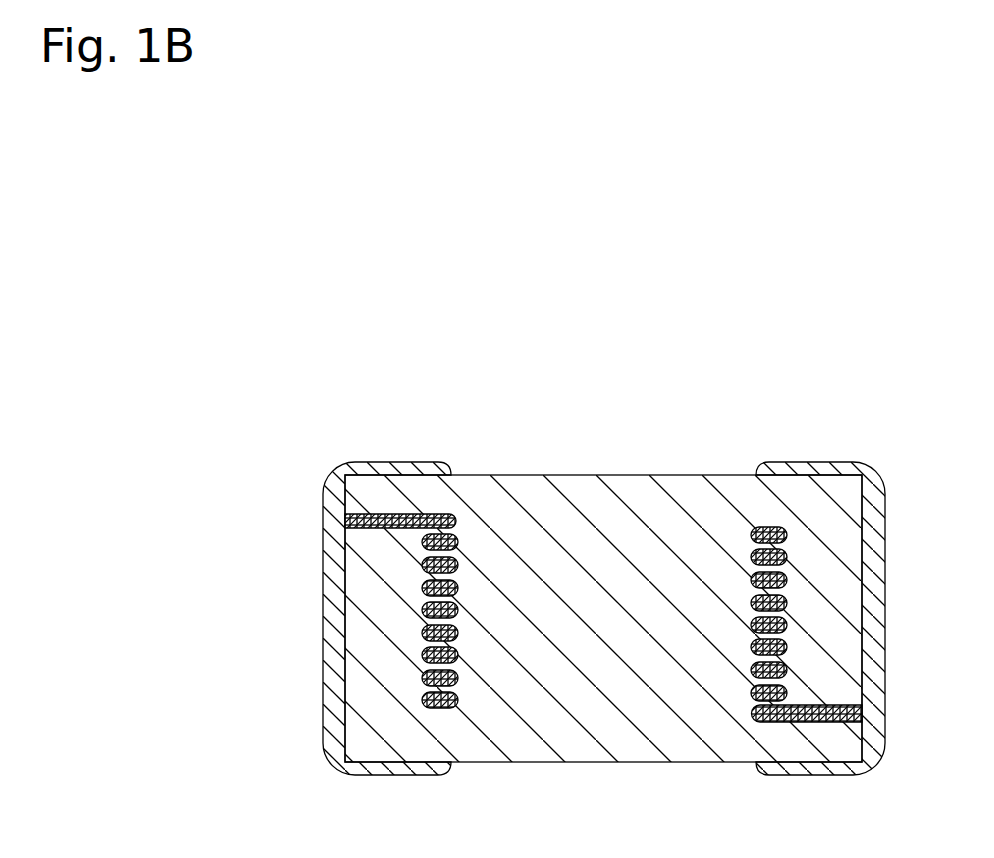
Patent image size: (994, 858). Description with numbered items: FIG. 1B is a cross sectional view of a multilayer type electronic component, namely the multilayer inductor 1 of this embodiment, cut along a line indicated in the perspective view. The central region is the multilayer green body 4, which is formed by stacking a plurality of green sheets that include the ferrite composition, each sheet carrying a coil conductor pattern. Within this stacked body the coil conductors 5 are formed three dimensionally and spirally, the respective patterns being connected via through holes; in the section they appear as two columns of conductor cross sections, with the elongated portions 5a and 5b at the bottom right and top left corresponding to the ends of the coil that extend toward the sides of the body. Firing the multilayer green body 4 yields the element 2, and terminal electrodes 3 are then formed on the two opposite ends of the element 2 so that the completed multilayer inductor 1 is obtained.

The multilayer ceramic capacitor 1 is at (603, 570).
The element 2 is at (603, 592).
The terminal electrode 3 is at (325, 603).
The multilayer green body 4 is at (687, 486).
The coil conductor 5 is at (603, 613).
The first internal electrode 5a is at (806, 724).
The second internal electrode 5b is at (398, 512).